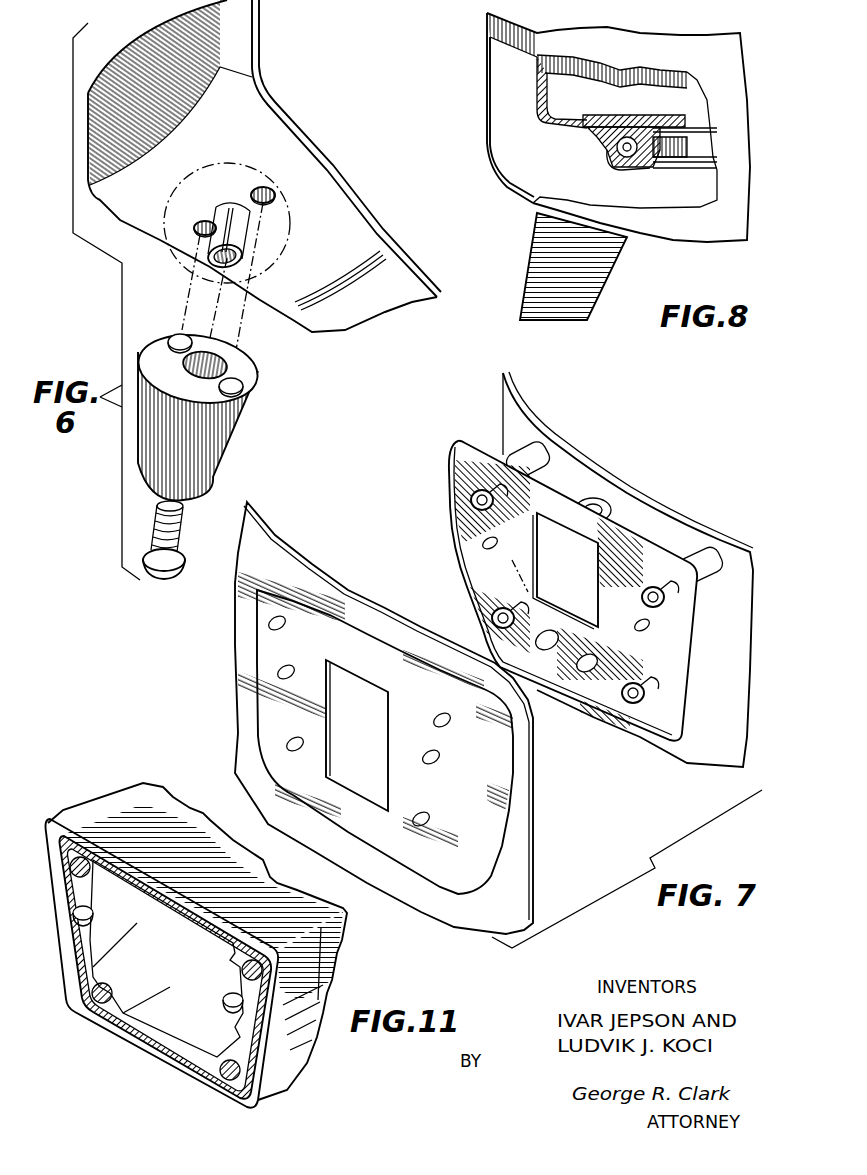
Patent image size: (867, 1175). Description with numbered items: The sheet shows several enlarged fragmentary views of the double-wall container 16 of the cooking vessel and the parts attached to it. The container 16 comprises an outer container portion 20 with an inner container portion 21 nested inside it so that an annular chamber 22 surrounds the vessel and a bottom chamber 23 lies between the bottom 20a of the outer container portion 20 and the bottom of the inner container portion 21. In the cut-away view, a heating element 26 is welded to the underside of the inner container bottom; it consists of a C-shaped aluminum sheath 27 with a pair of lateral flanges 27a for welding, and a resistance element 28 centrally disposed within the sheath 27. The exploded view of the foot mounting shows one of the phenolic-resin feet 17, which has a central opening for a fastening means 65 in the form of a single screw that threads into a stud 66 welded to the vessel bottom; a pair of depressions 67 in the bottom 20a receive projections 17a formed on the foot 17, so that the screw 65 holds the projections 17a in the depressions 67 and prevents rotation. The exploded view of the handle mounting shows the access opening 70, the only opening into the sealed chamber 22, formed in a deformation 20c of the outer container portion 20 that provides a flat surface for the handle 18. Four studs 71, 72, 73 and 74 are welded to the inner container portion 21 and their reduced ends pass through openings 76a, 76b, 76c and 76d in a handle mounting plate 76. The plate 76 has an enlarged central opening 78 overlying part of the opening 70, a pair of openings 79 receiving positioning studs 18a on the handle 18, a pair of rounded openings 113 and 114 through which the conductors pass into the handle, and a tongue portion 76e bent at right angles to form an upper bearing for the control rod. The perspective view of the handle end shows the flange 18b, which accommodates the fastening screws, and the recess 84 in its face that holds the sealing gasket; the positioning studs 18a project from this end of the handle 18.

In FIG. 8, the container 16 is at (486, 22).
In FIG. 6, the feet 17 is at (240, 430).
In FIG. 8, the feet 17 is at (627, 268).
In FIG. 6, the projections 17a is at (181, 337).
In FIG. 11, the handle 18 is at (93, 797).
In FIG. 11, the positioning studs 18a is at (92, 926).
In FIG. 11, the flange 18b is at (330, 1006).
In FIG. 6, the outer container portion 20 is at (259, 55).
In FIG. 8, the outer container portion 20 is at (483, 127).
In FIG. 7, the outer container portion 20 is at (537, 845).
In FIG. 6, the bottom of outer container portion 20a is at (437, 293).
In FIG. 7, the deformation 20c is at (513, 767).
In FIG. 8, the inner container portion 21 is at (537, 82).
In FIG. 7, the inner container portion 21 is at (756, 528).
In FIG. 8, the annular chamber 22 is at (508, 67).
In FIG. 8, the bottom chamber 23 is at (703, 188).
In FIG. 8, the heating element 26 is at (600, 145).
In FIG. 8, the sheath 27 is at (610, 167).
In FIG. 8, the lateral flanges 27a is at (680, 115).
In FIG. 8, the resistance element 28 is at (628, 157).
In FIG. 6, the fastening means 65 is at (178, 576).
In FIG. 6, the studs 66 is at (243, 255).
In FIG. 6, the depressions 67 is at (275, 193).
In FIG. 7, the access opening 70 is at (328, 733).
In FIG. 7, the stud 71 is at (683, 676).
In FIG. 7, the stud 72 is at (700, 570).
In FIG. 7, the stud 73 is at (517, 457).
In FIG. 7, the stud 74 is at (508, 576).
In FIG. 7, the handle mounting plate 76 is at (628, 560).
In FIG. 7, the opening 76a is at (650, 702).
In FIG. 7, the opening 76b is at (656, 600).
In FIG. 7, the opening 76c is at (472, 497).
In FIG. 7, the opening 76d is at (493, 613).
In FIG. 7, the tongue portion 76e is at (603, 503).
In FIG. 7, the central opening 78 is at (598, 566).
In FIG. 7, the openings 79 is at (481, 543).
In FIG. 11, the recess 84 is at (70, 947).
In FIG. 7, the opening 113 is at (537, 641).
In FIG. 7, the opening 114 is at (580, 665).